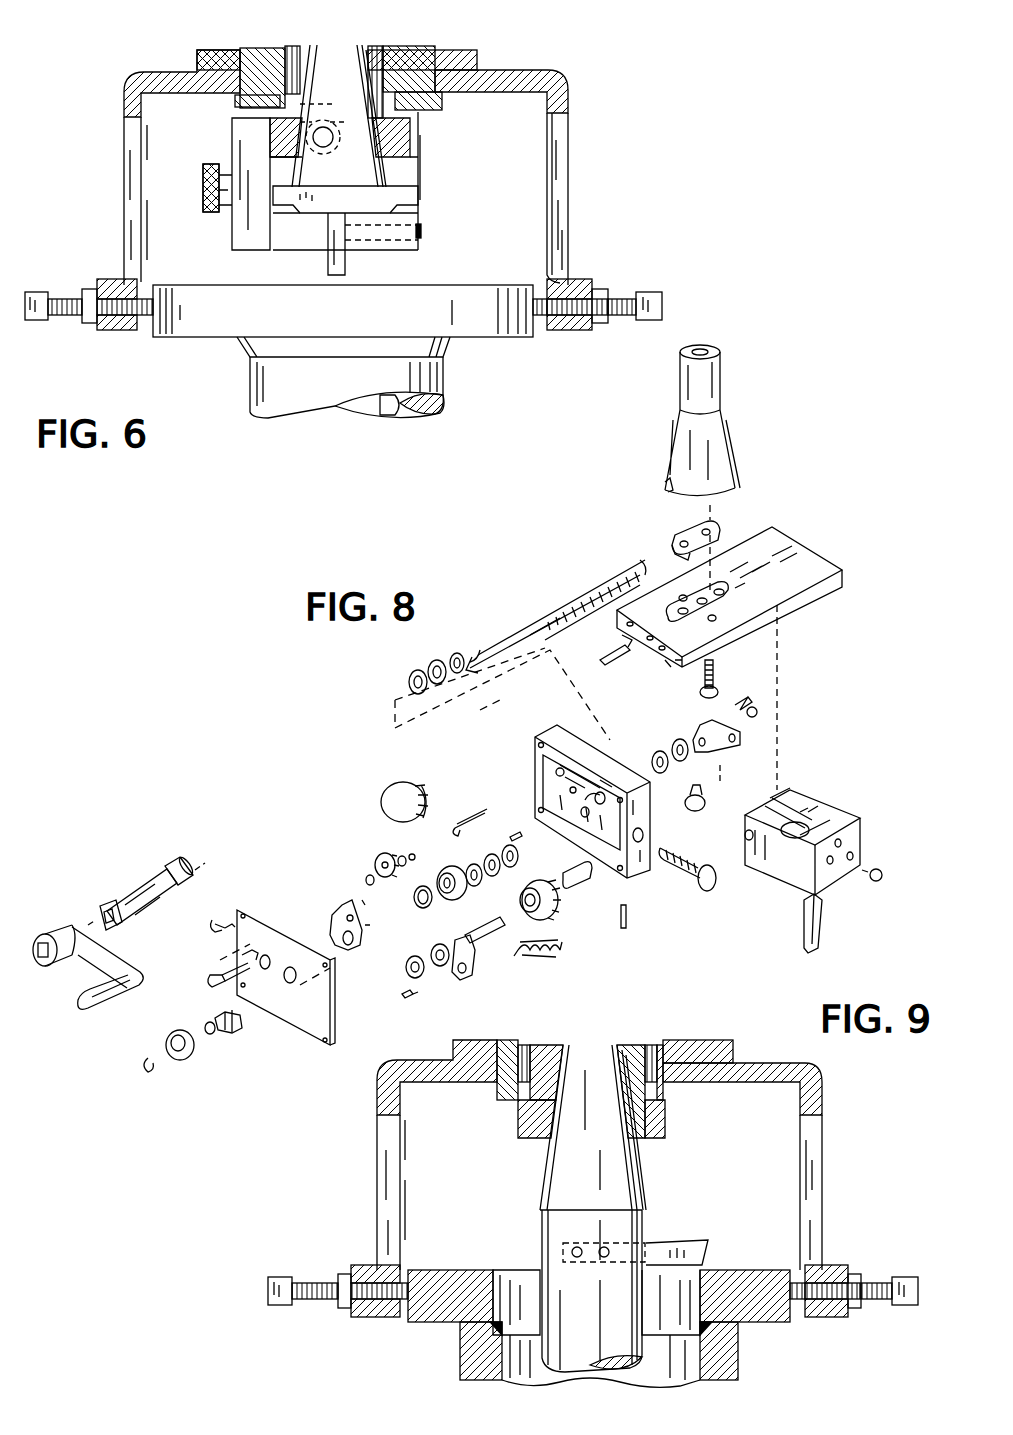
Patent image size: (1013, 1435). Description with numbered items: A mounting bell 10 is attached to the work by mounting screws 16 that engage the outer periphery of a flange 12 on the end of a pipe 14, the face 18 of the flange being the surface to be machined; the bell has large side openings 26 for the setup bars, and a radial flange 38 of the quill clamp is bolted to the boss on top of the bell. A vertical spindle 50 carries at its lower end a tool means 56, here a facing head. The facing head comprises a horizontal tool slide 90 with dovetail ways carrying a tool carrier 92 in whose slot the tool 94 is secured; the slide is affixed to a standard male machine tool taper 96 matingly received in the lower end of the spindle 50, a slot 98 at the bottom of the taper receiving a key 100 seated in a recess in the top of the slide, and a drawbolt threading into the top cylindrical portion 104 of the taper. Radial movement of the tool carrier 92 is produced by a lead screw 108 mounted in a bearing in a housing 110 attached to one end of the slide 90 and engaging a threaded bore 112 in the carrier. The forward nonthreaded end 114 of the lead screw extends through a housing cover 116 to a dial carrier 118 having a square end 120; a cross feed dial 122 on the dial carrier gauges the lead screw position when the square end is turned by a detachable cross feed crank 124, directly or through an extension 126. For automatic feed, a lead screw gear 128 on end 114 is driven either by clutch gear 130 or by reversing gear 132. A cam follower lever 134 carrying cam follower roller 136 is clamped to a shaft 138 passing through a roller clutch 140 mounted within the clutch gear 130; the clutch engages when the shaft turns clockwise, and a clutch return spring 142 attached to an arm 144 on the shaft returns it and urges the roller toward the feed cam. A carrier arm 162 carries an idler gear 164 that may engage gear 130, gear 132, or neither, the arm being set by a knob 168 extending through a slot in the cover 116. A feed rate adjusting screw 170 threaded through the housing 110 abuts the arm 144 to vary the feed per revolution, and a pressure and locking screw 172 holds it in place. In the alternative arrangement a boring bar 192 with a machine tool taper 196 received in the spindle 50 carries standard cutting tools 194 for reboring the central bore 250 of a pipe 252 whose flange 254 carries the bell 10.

In FIG. 6, the mounting bell 10 is at (560, 92).
In FIG. 9, the mounting bell 10 is at (820, 1078).
In FIG. 6, the flange 12 is at (186, 325).
In FIG. 6, the pipe 14 is at (256, 386).
In FIG. 6, the mounting screws 16 is at (65, 292).
In FIG. 9, the mounting screws 16 is at (312, 1277).
In FIG. 6, the flange face 18 is at (183, 285).
In FIG. 6, the side openings 26 is at (128, 130).
In FIG. 9, the side openings 26 is at (385, 1112).
In FIG. 6, the radial flange 38 is at (477, 55).
In FIG. 6, the spindle 50 is at (300, 52).
In FIG. 9, the spindle 50 is at (628, 1045).
In FIG. 6, the tool means 56 is at (443, 212).
In FIG. 6, the tool slide 90 is at (410, 190).
In FIG. 8, the tool slide 90 is at (793, 552).
In FIG. 6, the tool carrier 92 is at (410, 255).
In FIG. 8, the tool carrier 92 is at (780, 865).
In FIG. 6, the tool 94 is at (330, 266).
In FIG. 8, the tool 94 is at (822, 920).
In FIG. 6, the machine tool taper 96 is at (372, 170).
In FIG. 8, the machine tool taper 96 is at (720, 468).
In FIG. 8, the slot 98 is at (665, 488).
In FIG. 8, the key 100 is at (722, 530).
In FIG. 8, the top cylindrical portion 104 is at (710, 378).
In FIG. 8, the lead screw 108 is at (570, 595).
In FIG. 6, the housing 110 is at (232, 222).
In FIG. 8, the housing 110 is at (555, 732).
In FIG. 8, the threaded bore 112 is at (745, 845).
In FIG. 8, the nonthreaded end 114 is at (492, 635).
In FIG. 8, the housing cover 116 is at (268, 918).
In FIG. 8, the dial carrier 118 is at (240, 1024).
In FIG. 8, the square end 120 is at (220, 1013).
In FIG. 8, the cross feed dial 122 is at (183, 1060).
In FIG. 8, the cross feed crank 124 is at (82, 1000).
In FIG. 8, the extension 126 is at (148, 882).
In FIG. 8, the lead screw gear 128 is at (452, 870).
In FIG. 8, the clutch gear 130 is at (556, 910).
In FIG. 8, the reversing gear 132 is at (388, 800).
In FIG. 8, the cam follower lever 134 is at (740, 742).
In FIG. 8, the cam follower roller 136 is at (703, 808).
In FIG. 8, the shaft 138 is at (482, 940).
In FIG. 8, the roller clutch 140 is at (585, 882).
In FIG. 8, the clutch return spring 142 is at (555, 960).
In FIG. 8, the arm 144 is at (475, 965).
In FIG. 8, the carrier arm 162 is at (330, 920).
In FIG. 8, the idler gear 164 is at (378, 860).
In FIG. 8, the knob 168 is at (205, 978).
In FIG. 6, the feed rate adjusting screw 170 is at (203, 188).
In FIG. 8, the feed rate adjusting screw 170 is at (700, 884).
In FIG. 8, the pressure and locking screw 172 is at (628, 918).
In FIG. 9, the boring bar 192 is at (640, 1222).
In FIG. 9, the cutting tools 194 is at (705, 1250).
In FIG. 9, the machine tool taper 196 is at (548, 1180).
In FIG. 9, the central bore 250 is at (495, 1290).
In FIG. 9, the pipe 252 is at (460, 1365).
In FIG. 9, the flange 254 is at (430, 1325).